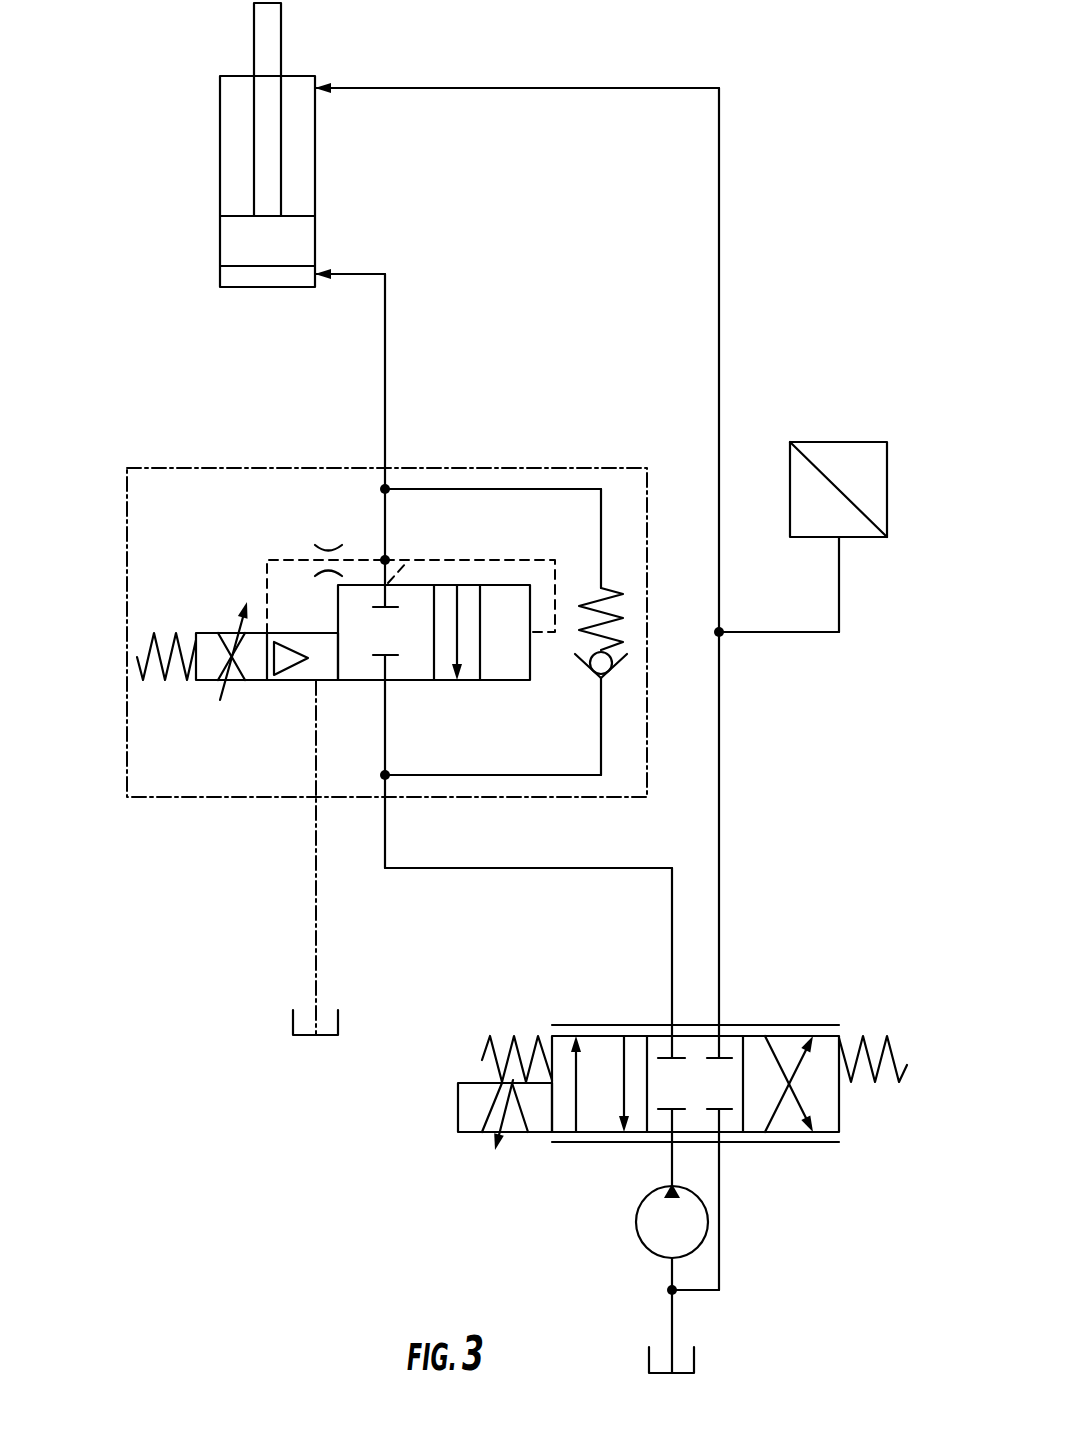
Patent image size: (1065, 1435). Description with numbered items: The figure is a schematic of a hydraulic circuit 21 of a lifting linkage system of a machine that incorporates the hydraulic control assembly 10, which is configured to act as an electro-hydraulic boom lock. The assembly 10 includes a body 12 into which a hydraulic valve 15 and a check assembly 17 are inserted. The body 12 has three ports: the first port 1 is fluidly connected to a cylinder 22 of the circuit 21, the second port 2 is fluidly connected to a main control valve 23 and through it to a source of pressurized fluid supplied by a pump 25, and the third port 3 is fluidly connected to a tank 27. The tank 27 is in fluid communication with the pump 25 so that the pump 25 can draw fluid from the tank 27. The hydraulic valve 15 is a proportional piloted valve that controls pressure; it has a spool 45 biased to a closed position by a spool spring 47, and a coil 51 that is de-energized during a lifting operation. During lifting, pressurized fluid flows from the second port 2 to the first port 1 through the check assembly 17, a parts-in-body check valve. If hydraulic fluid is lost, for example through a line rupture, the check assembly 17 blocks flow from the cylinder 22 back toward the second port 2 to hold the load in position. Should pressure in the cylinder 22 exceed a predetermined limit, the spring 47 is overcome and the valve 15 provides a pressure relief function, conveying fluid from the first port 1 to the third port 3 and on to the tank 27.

The hydraulic control assembly 10 is at (482, 688).
The hydraulic circuit 21 is at (247, 145).
The cylinder 22 is at (220, 170).
The body 12 is at (114, 742).
The hydraulic valve 15 is at (306, 771).
The spool 45 is at (457, 680).
The spool spring 47 is at (146, 645).
The coil 51 is at (210, 681).
The check assembly 17 is at (619, 578).
The main control valve 23 is at (600, 1025).
The pump 25 is at (636, 1218).
The tank 27 is at (293, 1018).
The first port 1 is at (385, 489).
The second port 2 is at (386, 775).
The third port 3 is at (315, 681).